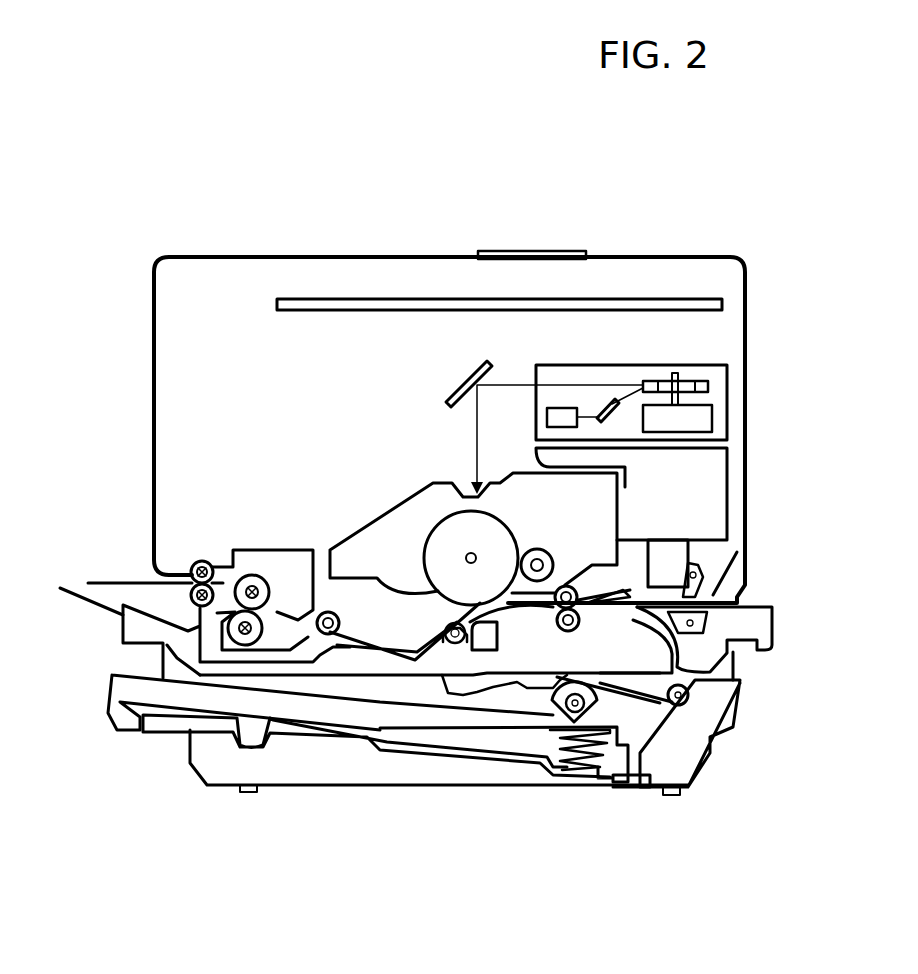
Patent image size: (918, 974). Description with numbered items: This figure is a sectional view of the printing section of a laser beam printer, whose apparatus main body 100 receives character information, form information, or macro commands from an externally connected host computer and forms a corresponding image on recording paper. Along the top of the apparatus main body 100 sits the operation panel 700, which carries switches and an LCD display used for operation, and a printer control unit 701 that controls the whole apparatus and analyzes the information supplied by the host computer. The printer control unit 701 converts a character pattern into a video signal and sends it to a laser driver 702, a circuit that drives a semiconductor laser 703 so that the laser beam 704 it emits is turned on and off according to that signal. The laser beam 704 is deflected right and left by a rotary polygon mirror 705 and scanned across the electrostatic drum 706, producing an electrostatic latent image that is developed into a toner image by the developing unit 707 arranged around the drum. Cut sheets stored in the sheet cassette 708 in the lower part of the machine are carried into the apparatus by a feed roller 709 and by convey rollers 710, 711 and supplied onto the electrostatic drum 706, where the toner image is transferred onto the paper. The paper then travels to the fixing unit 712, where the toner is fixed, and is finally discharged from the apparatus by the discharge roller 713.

The apparatus main body 100 is at (676, 258).
The operation panel 700 is at (536, 251).
The printer control unit 701 is at (722, 305).
The laser driver 702 is at (547, 418).
The semiconductor laser 703 is at (612, 421).
The laser beam 704 is at (617, 385).
The rotary polygon mirror 705 is at (708, 386).
The electrostatic drum 706 is at (447, 527).
The developing unit 707 is at (372, 540).
The sheet cassette 708 is at (110, 698).
The feed roller 709 is at (552, 708).
The convey roller 710 is at (678, 706).
The convey roller 711 is at (558, 630).
The fixing unit 712 is at (253, 576).
The discharge roller 713 is at (203, 560).